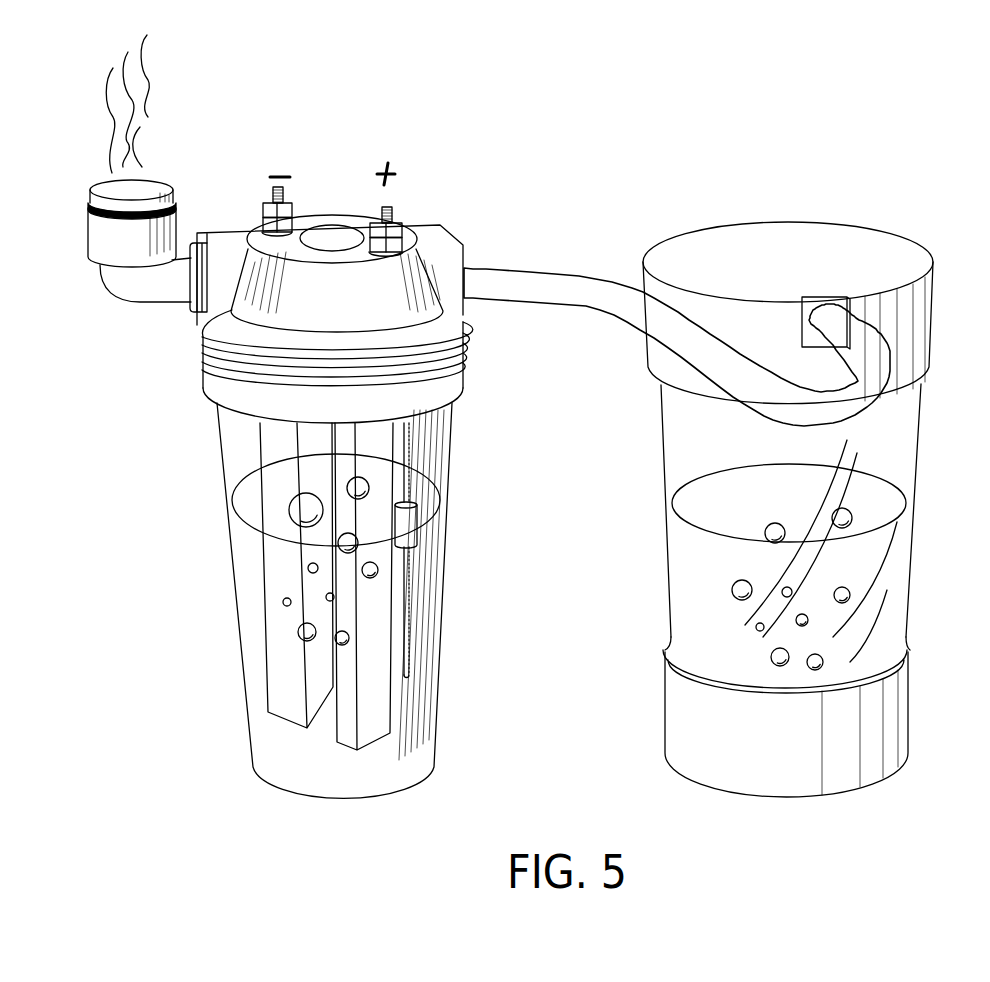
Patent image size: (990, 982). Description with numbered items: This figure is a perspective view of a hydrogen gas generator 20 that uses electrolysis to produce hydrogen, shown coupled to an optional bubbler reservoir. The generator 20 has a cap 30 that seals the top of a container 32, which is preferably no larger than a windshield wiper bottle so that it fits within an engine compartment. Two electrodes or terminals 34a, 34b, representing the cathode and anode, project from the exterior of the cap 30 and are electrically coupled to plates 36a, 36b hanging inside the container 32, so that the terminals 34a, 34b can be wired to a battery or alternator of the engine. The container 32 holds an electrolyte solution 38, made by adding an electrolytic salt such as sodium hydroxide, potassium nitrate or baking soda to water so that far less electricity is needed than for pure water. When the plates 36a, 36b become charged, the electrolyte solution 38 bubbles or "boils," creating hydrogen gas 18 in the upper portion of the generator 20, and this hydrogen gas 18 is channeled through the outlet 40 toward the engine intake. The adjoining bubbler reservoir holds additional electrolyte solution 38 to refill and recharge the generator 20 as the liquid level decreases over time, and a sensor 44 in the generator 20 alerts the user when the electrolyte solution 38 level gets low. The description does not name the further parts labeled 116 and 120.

The hydrogen gas 18 is at (145, 78).
The hydrogen gas generator 20 is at (450, 147).
The cap 30 is at (388, 303).
The container 32 is at (237, 452).
The electrode or terminal 34a is at (263, 205).
The electrode or terminal 34b is at (368, 225).
The plate 36a is at (282, 701).
The plate 36b is at (372, 710).
The electrolyte solution 38 is at (260, 643).
The outlet 40 is at (628, 520).
The sensor 44 is at (410, 522).
The liquid in vessel 116 is at (887, 572).
The elbow vent fitting 120 is at (97, 237).